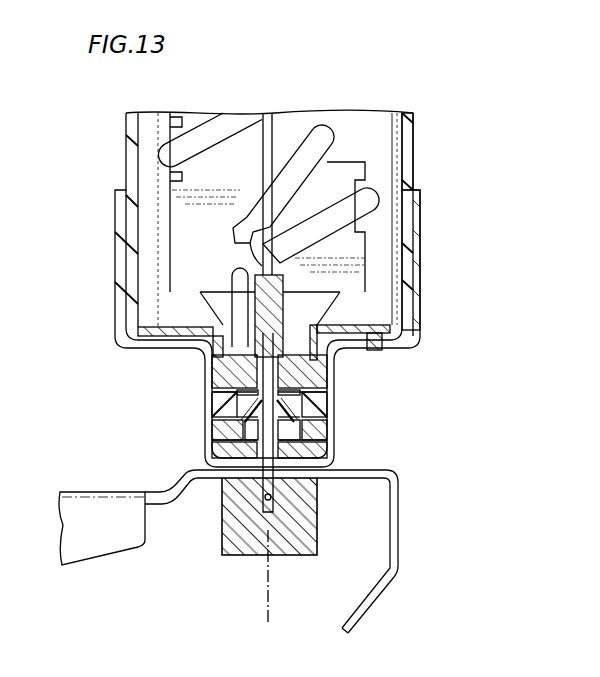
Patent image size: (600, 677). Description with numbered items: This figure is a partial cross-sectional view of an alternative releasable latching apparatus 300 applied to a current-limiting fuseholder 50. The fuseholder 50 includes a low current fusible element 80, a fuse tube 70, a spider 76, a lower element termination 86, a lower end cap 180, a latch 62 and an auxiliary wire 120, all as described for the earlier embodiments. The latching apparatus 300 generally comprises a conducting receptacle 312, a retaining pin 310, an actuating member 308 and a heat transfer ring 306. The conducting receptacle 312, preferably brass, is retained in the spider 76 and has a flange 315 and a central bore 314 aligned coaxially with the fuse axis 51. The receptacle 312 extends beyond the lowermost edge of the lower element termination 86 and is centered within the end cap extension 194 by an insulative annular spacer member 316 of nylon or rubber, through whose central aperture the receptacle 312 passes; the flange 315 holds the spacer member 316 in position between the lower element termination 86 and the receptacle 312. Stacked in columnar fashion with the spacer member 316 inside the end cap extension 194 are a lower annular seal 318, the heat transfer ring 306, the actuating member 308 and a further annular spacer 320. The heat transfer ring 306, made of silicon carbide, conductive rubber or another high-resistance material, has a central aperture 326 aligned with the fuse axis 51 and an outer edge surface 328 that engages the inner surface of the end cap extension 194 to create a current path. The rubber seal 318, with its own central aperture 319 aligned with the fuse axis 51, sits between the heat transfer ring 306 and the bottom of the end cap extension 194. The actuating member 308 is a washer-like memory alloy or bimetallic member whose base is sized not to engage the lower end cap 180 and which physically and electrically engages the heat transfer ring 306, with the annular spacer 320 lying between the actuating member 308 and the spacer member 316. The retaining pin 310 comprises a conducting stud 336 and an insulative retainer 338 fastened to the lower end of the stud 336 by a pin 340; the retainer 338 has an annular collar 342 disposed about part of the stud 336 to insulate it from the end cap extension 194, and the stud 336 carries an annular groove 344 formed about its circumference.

The current-limiting fuseholder 50 is at (418, 124).
The fuse axis 51 is at (266, 607).
The latch 62 is at (74, 497).
The fuse tube 70 is at (407, 148).
The spider 76 is at (290, 128).
The low current fusible element 80 is at (372, 205).
The lower element termination 86 is at (385, 332).
The auxiliary wire 120 is at (330, 133).
The lower end cap 180 is at (418, 217).
The end cap extension 194 is at (213, 385).
The releasable latching apparatus 300 is at (423, 445).
The heat transfer ring 306 is at (292, 434).
The actuating member 308 is at (328, 413).
The retaining pin 310 is at (220, 544).
The conducting receptacle 312 is at (284, 286).
The central bore 314 is at (240, 330).
The flange 315 is at (330, 385).
The annular spacer member 316 is at (208, 362).
The lower annular seal 318 is at (328, 452).
The central aperture 319 is at (220, 458).
The annular spacer 320 is at (217, 403).
The central aperture 326 is at (314, 440).
The outer edge surface 328 is at (213, 433).
The conducting stud 336 is at (337, 372).
The insulative retainer 338 is at (316, 542).
The pin 340 is at (274, 496).
The collar 342 is at (253, 457).
The annular groove 344 is at (280, 398).